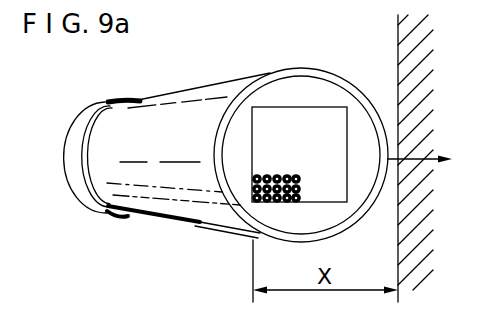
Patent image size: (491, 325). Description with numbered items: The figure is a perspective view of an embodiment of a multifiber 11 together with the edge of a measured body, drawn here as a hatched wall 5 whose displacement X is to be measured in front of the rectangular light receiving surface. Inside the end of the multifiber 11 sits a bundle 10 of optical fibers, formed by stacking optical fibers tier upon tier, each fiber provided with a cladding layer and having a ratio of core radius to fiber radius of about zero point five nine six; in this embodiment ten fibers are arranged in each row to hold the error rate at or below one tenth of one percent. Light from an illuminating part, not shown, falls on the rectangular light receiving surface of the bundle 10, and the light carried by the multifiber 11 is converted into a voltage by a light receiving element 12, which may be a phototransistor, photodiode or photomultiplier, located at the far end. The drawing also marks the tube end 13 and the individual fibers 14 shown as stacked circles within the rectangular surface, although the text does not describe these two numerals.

The wall 5 is at (421, 32).
The bundle of optical fibers 10 is at (336, 203).
The multifiber 11 is at (212, 101).
The light receiving element 12 is at (111, 101).
The tube end ring 13 is at (358, 120).
The balls 14 is at (288, 177).